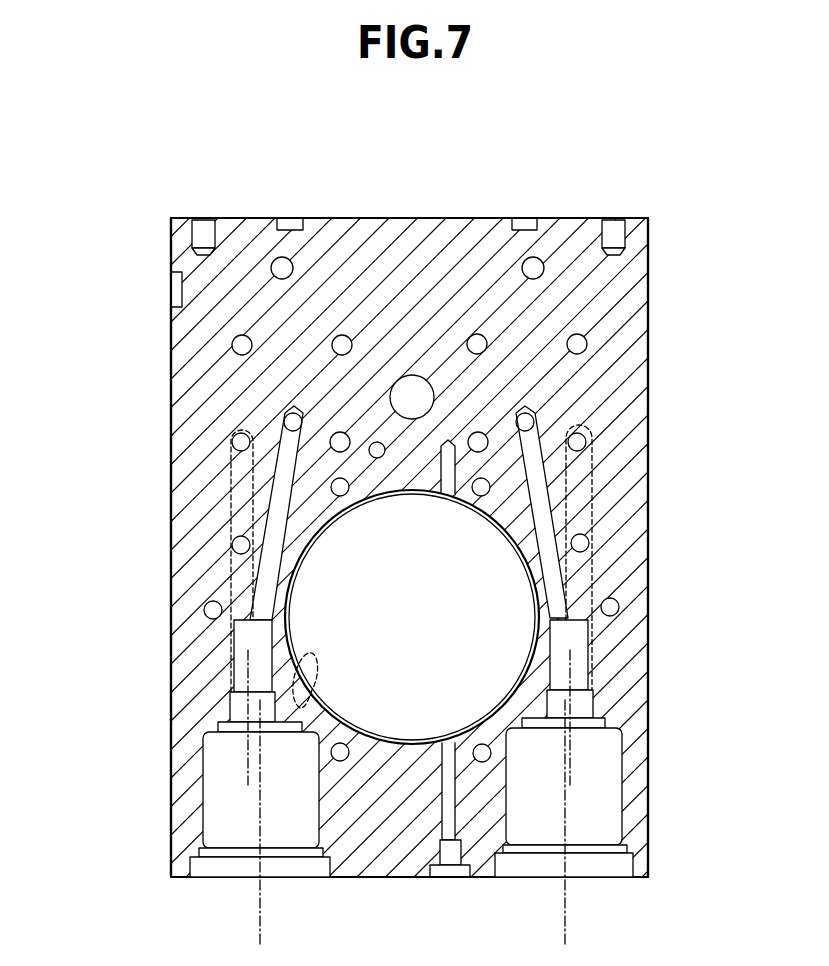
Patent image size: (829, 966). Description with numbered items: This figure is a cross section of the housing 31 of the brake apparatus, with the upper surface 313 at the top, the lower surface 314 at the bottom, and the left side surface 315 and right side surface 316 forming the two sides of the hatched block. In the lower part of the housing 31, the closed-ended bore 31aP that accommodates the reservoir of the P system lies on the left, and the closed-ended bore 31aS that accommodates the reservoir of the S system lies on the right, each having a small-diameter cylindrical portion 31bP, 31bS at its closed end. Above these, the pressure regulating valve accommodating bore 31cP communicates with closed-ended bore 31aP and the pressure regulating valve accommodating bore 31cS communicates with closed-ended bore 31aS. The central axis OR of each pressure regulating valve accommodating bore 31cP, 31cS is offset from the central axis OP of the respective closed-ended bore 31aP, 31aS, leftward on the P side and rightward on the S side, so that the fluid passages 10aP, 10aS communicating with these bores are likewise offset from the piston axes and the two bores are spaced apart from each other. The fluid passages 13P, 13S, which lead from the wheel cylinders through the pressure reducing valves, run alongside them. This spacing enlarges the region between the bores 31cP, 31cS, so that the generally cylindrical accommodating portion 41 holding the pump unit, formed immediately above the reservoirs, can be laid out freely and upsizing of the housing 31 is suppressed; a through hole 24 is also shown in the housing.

The housing 31 is at (403, 210).
The upper surface 313 is at (567, 216).
The lower surface 314 is at (383, 878).
The left side surface 315 is at (649, 718).
The right side surface 316 is at (172, 798).
The through hole 24 is at (437, 398).
The accommodating portion 41 is at (505, 565).
The fluid passage 10aP is at (270, 520).
The fluid passage 10aS is at (548, 565).
The fluid passage 13P is at (232, 480).
The fluid passage 13S is at (593, 478).
The closed-ended bore 31aP is at (207, 833).
The closed-ended bore 31aS is at (607, 823).
The small-diameter cylindrical portion 31bP is at (222, 745).
The small-diameter cylindrical portion 31bS is at (600, 741).
The pressure regulating valve accommodating bore 31cP is at (236, 652).
The pressure regulating valve accommodating bore 31cS is at (588, 652).
The central axis of pressure regulating valve accommodating bore OR is at (240, 757).
The central axis of closed-ended bore OP is at (252, 917).